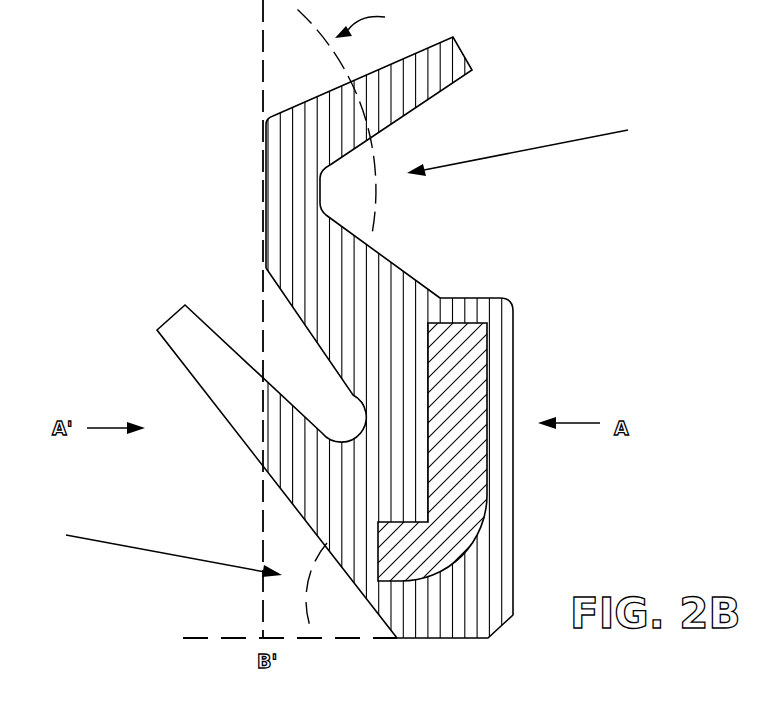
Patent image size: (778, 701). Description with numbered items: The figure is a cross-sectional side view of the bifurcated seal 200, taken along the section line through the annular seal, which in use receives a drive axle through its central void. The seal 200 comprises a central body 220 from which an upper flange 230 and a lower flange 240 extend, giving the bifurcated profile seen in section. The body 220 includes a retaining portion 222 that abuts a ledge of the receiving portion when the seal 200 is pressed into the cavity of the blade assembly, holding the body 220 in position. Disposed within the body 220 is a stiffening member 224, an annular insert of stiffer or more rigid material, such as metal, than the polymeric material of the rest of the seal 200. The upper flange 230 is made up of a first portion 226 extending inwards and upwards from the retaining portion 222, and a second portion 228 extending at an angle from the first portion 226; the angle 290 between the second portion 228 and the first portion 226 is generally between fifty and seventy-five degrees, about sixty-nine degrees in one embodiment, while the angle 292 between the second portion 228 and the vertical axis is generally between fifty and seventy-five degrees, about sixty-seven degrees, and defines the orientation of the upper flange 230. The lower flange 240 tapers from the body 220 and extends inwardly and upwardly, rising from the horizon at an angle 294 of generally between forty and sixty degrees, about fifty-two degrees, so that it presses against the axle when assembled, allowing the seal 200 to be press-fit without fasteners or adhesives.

The bifurcated seal 200 is at (152, 122).
The central body 220 is at (497, 538).
The retaining portion 222 is at (480, 297).
The stiffening member 224 is at (472, 440).
The first portion 226 is at (383, 252).
The second portion 228 is at (268, 197).
The upper flange 230 is at (455, 78).
The lower flange 240 is at (257, 458).
The angle 290 is at (536, 147).
The angle 292 is at (361, 118).
The angle 294 is at (174, 574).